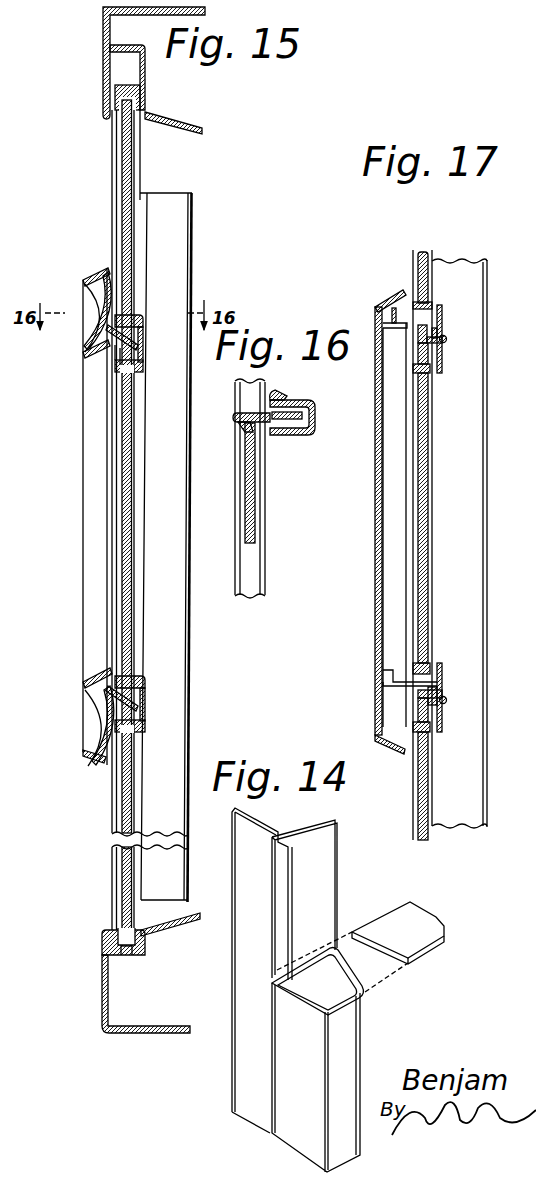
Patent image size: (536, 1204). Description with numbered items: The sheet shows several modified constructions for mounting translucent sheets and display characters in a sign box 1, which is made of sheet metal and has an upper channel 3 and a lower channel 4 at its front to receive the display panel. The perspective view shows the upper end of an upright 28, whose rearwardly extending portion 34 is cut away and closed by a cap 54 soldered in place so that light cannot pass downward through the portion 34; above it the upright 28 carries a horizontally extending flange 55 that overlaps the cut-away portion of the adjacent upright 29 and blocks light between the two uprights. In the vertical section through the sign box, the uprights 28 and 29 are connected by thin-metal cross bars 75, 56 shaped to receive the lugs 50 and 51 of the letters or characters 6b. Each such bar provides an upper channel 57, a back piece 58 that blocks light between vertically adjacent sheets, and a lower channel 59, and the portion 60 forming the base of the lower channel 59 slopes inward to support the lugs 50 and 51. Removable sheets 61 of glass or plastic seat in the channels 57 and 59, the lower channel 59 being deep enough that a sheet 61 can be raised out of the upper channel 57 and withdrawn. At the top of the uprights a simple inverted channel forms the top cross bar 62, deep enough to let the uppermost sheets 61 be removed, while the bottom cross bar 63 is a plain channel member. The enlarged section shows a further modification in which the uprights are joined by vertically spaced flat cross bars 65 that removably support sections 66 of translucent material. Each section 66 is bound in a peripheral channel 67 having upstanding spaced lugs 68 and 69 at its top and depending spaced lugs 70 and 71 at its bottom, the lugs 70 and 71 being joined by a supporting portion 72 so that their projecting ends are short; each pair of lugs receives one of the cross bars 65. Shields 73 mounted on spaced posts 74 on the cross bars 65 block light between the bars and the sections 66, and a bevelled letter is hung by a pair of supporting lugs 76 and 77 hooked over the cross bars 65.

In FIG. 15, the sign box 1 is at (100, 1013).
In FIG. 15, the upper channel 3 is at (122, 57).
In FIG. 15, the lower channel 4 is at (133, 955).
In FIG. 15, the letters or characters 6b is at (93, 517).
In FIG. 16, the upright 28 is at (275, 433).
In FIG. 17, the upright 28 is at (487, 452).
In FIG. 14, the upright 28 is at (243, 847).
In FIG. 16, the upright 29 is at (245, 415).
In FIG. 14, the rearwardly extending portion 34 is at (355, 1035).
In FIG. 15, the projection (lug) 50 is at (115, 337).
In FIG. 15, the projection (lug) 51 is at (107, 695).
In FIG. 14, the cap 54 is at (418, 913).
In FIG. 14, the horizontally extending flange 55 is at (337, 875).
In FIG. 15, the cross bar 56 is at (143, 333).
In FIG. 15, the upper channel 57 is at (147, 318).
In FIG. 15, the back piece 58 is at (145, 347).
In FIG. 15, the lower channel 59 is at (145, 367).
In FIG. 15, the base portion of lower channel 60 is at (115, 362).
In FIG. 15, the removable sheets 61 is at (133, 128).
In FIG. 15, the top cross bar 62 is at (125, 86).
In FIG. 15, the bottom cross bar 63 is at (107, 958).
In FIG. 17, the cross bars 65 is at (436, 352).
In FIG. 17, the sections 66 is at (427, 493).
In FIG. 17, the peripheral channel 67 is at (428, 370).
In FIG. 17, the upstanding lug 68 is at (411, 347).
In FIG. 17, the upstanding lug 69 is at (440, 362).
In FIG. 17, the depending lug 70 is at (418, 693).
In FIG. 17, the depending lug 71 is at (445, 703).
In FIG. 17, the supporting portion 72 is at (417, 673).
In FIG. 17, the shields 73 is at (442, 307).
In FIG. 17, the posts 74 is at (440, 330).
In FIG. 17, the cross bar 75 is at (377, 523).
In FIG. 17, the supporting lug 76 is at (395, 303).
In FIG. 17, the supporting lug 77 is at (393, 690).